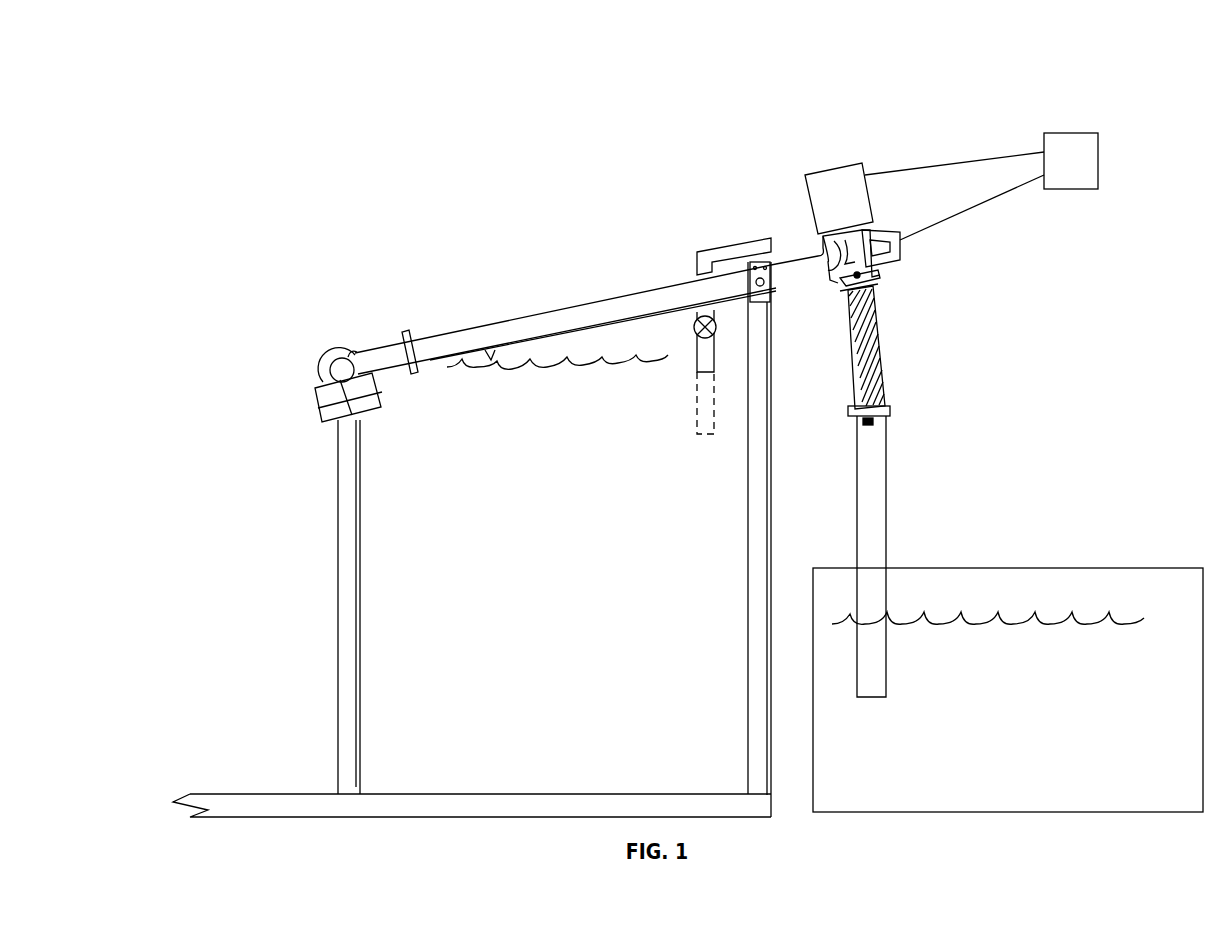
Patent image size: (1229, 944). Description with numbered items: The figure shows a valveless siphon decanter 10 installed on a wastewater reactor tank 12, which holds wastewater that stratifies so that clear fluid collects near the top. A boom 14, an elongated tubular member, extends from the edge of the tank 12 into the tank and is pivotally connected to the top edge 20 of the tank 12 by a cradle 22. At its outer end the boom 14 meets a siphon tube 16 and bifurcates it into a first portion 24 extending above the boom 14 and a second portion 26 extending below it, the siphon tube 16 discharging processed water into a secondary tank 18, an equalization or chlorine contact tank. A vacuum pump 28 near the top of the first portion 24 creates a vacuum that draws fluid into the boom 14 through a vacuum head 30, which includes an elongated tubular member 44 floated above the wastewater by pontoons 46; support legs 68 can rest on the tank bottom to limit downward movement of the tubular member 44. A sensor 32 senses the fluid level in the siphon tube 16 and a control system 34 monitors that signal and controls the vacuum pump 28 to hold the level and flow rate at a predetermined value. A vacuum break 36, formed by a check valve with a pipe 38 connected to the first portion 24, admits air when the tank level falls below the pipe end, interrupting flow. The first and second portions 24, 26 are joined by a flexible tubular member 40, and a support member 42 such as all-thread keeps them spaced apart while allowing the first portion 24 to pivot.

The decanter 10 is at (897, 122).
The tank 12 is at (380, 806).
The boom 14 is at (503, 330).
The siphon tube 16 is at (918, 441).
The secondary tank 18 is at (1042, 568).
The top edge 20 is at (492, 356).
The cradle 22 is at (752, 262).
The first portion 24 is at (812, 240).
The second portion 26 is at (905, 270).
The vacuum pump 28 is at (838, 168).
The vacuum head 30 is at (298, 398).
The sensor 32 is at (805, 248).
The control system 34 is at (981, 186).
The vacuum break 36 is at (682, 330).
The pipe 38 is at (693, 372).
The flexible tubular member 40 is at (880, 350).
The support member 42 is at (884, 388).
The elongated tubular member 44 is at (320, 354).
The pontoons 46 is at (376, 390).
The support legs 68 is at (362, 580).